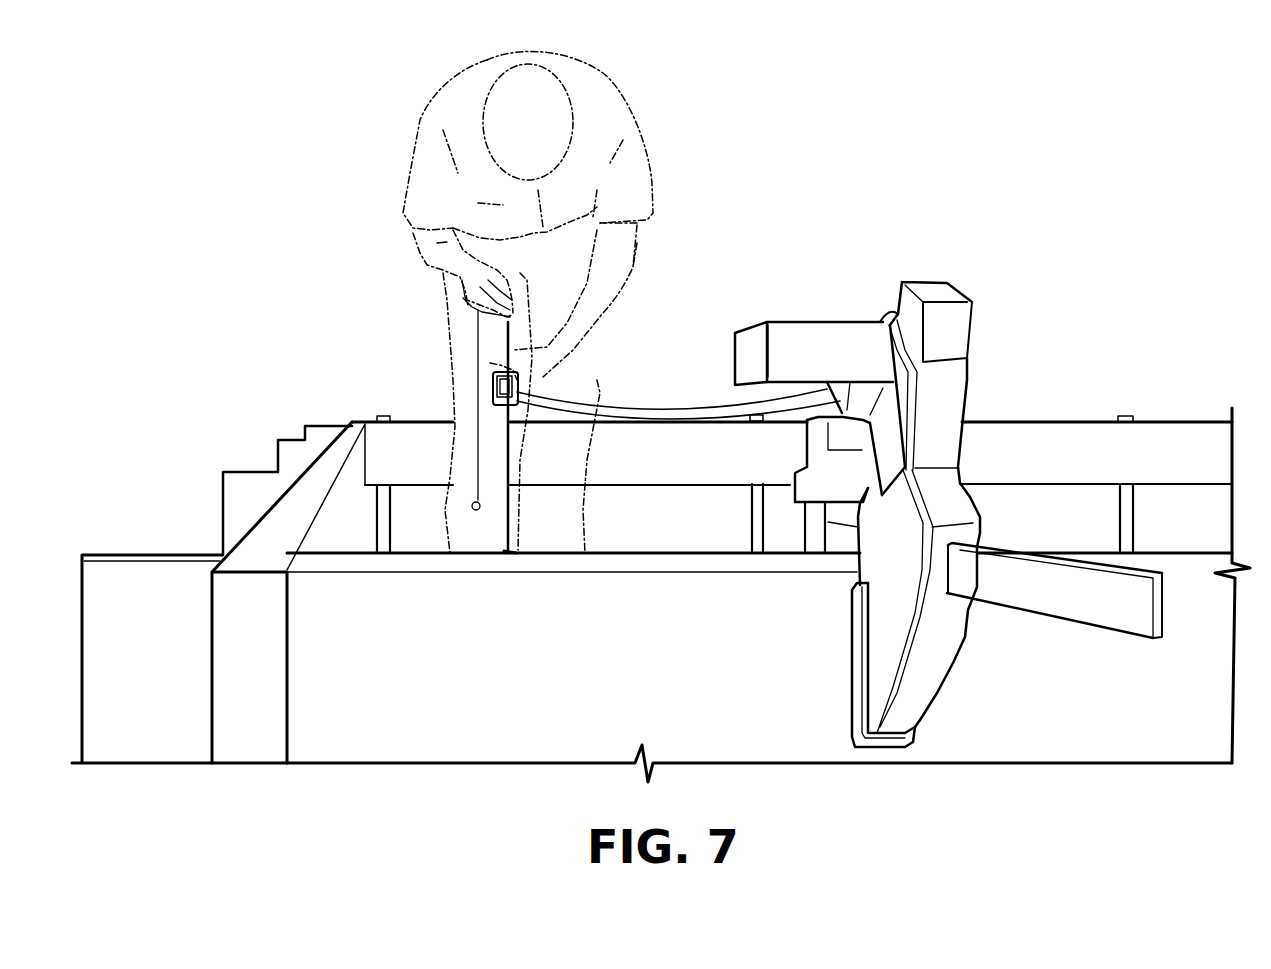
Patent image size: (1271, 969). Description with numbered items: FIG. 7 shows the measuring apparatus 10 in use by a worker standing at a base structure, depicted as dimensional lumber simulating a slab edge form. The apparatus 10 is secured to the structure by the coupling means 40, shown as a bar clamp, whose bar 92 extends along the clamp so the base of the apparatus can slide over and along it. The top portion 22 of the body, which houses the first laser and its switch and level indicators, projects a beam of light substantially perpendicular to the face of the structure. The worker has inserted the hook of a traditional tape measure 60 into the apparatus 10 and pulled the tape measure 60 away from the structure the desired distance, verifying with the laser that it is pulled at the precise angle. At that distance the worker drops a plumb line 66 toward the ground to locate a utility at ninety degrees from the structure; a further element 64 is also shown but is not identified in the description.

The measuring apparatus 10 is at (1024, 292).
The top portion 22 is at (823, 350).
The coupling means 40 is at (898, 530).
The tape measure 60 is at (693, 410).
The pull cord 64 is at (468, 423).
The plumb line 66 is at (513, 551).
The bar 92 is at (1118, 598).